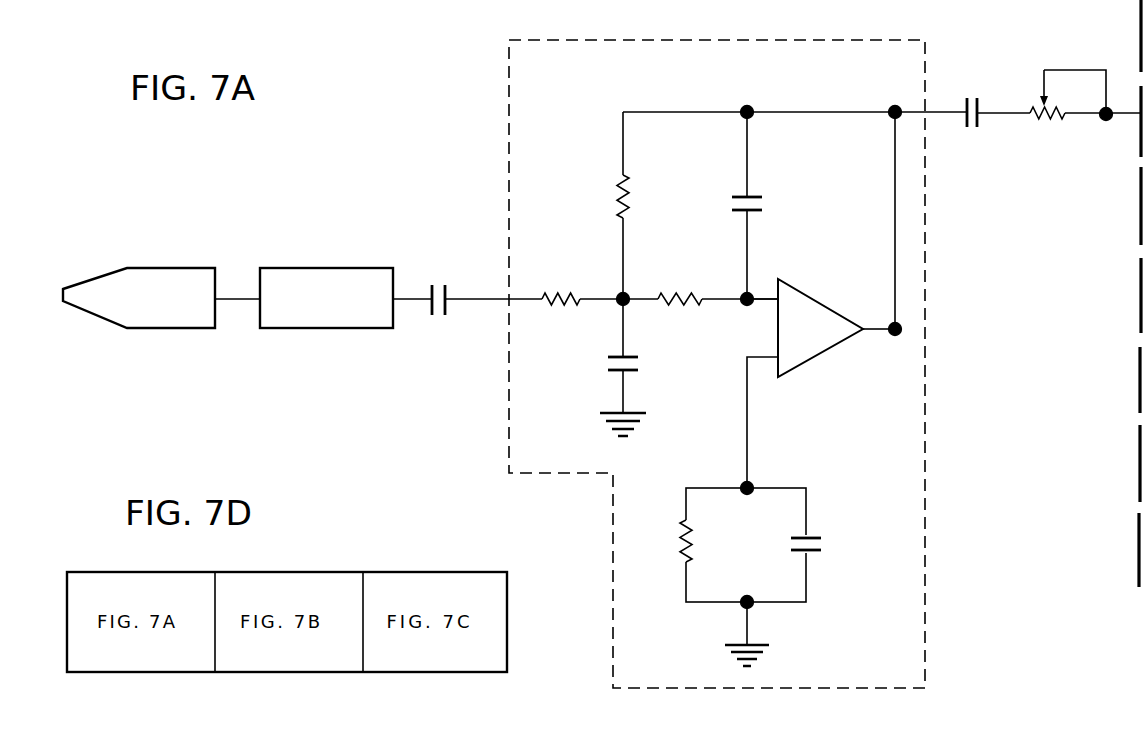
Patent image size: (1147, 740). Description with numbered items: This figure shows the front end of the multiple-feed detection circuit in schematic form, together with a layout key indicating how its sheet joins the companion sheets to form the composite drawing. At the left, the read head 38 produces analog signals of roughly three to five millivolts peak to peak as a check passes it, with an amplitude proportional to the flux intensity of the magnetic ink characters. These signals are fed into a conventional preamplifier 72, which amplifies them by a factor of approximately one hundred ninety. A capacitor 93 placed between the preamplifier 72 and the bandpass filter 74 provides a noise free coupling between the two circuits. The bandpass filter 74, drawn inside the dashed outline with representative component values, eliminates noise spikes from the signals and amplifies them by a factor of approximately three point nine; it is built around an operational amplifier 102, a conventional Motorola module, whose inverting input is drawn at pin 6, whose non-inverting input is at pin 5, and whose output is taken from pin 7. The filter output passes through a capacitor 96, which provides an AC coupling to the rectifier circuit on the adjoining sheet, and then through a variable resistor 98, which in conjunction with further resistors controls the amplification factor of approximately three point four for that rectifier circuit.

The read head 38 is at (187, 268).
The preamplifier 72 is at (366, 268).
The capacitor 93 is at (446, 284).
The bandpass filter 74 is at (509, 160).
The operational amplifier module 102 is at (815, 345).
The capacitor 96 is at (980, 98).
The variable resistor 98 is at (1058, 112).
The op amp non-inverting input pin 5 is at (762, 409).
The op amp inverting input pin 6 is at (759, 286).
The op amp output pin 7 is at (882, 318).